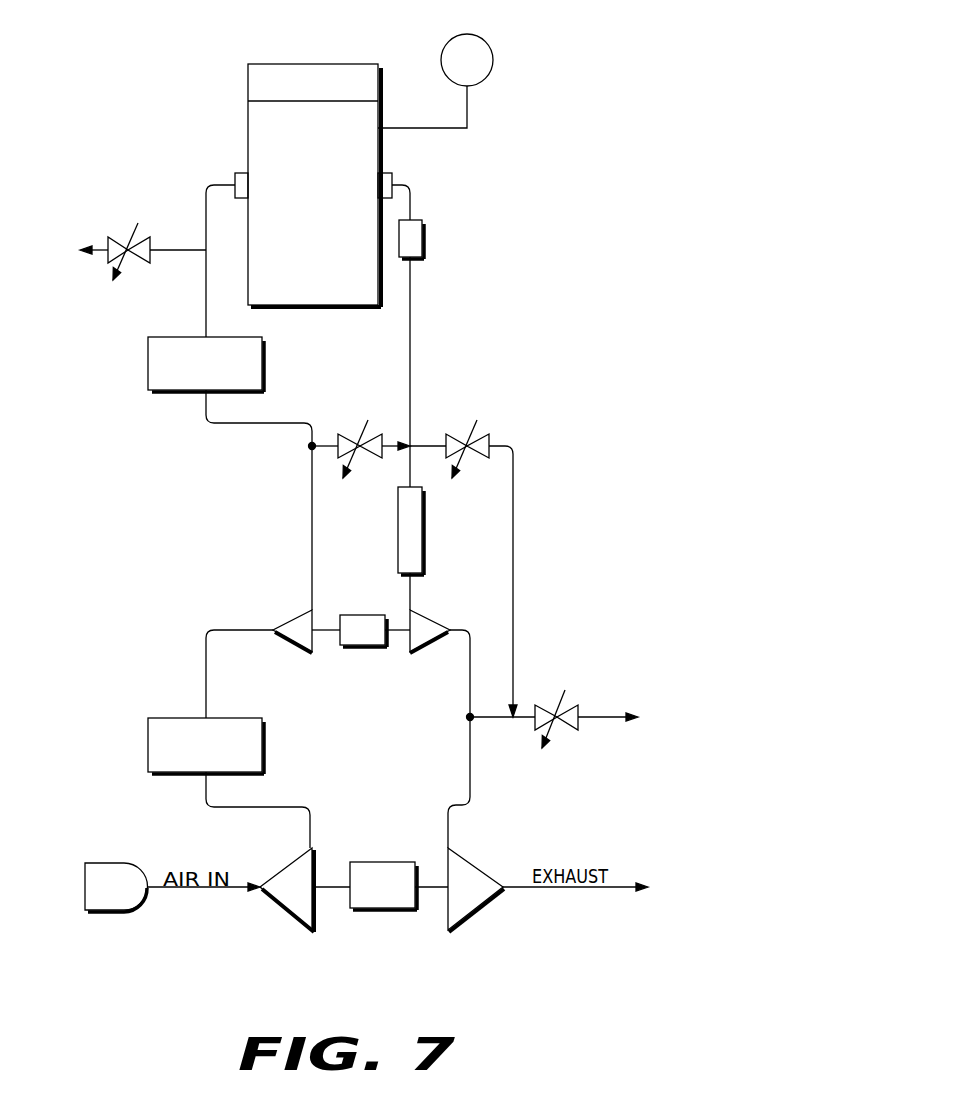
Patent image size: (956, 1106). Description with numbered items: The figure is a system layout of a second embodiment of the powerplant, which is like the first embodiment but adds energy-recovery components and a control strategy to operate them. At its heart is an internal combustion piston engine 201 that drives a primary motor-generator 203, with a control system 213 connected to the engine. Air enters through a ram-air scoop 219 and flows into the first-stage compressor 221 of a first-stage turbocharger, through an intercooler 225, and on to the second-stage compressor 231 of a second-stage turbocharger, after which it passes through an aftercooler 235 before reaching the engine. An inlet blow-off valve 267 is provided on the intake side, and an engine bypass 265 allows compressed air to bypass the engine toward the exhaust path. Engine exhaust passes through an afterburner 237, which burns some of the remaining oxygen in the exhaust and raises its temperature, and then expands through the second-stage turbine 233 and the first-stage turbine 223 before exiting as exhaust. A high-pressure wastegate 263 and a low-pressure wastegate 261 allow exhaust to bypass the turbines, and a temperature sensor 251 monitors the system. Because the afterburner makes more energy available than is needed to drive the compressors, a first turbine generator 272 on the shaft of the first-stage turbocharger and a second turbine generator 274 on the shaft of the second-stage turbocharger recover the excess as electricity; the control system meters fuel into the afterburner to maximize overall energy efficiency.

The internal combustion piston engine 201 is at (296, 210).
The primary motor-generator 203 is at (296, 96).
The control system 213 is at (451, 72).
The ram-air scoop 219 is at (124, 899).
The first-stage compressor 221 is at (308, 899).
The first-stage turbine 223 is at (480, 899).
The intercooler 225 is at (188, 757).
The second-stage compressor 231 is at (297, 616).
The second-stage turbine 233 is at (430, 618).
The aftercooler 235 is at (188, 376).
The afterburner 237 is at (422, 563).
The temperature sensor 251 is at (422, 242).
The low-pressure wastegate 261 is at (572, 703).
The high-pressure wastegate 263 is at (473, 440).
The engine bypass 265 is at (363, 444).
The inlet blow-off valve 267 is at (127, 237).
The first turbine generator 272 is at (383, 900).
The second turbine generator 274 is at (363, 632).